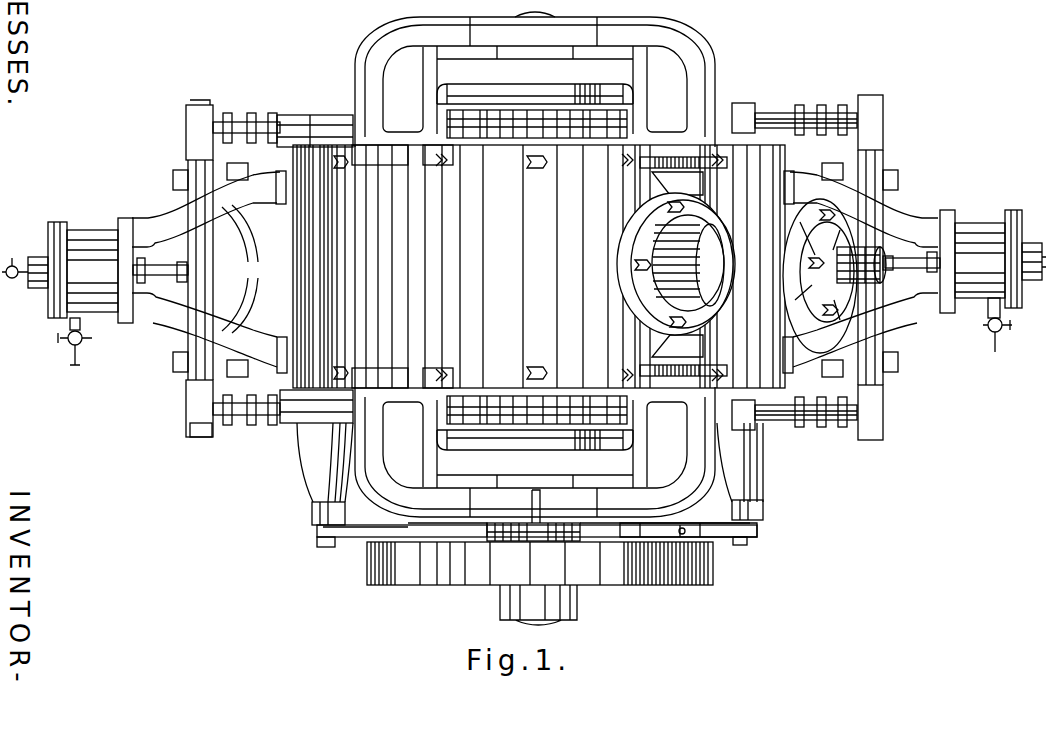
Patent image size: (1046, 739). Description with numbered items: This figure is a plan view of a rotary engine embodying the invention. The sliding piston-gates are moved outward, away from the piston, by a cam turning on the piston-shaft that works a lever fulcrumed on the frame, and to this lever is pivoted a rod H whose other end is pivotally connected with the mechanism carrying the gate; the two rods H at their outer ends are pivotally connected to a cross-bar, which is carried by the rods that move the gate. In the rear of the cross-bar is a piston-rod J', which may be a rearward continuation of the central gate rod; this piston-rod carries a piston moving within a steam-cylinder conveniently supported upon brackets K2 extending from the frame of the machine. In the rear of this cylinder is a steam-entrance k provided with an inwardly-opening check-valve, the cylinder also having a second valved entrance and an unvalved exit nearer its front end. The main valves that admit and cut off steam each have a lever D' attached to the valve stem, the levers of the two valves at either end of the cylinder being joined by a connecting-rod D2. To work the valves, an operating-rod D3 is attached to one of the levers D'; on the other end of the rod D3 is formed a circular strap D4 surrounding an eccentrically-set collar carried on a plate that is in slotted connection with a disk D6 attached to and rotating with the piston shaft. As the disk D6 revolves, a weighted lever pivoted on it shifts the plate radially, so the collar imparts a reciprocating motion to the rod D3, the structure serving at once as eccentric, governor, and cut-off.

The steam-entrance k is at (14, 268).
The piston-rod J' is at (537, 264).
The brackets K2 is at (148, 219).
The rod H is at (855, 108).
The lever D' is at (540, 476).
The connecting-rod D2 is at (355, 543).
The operating-rod D3 is at (658, 535).
The circular strap D4 is at (488, 530).
The disk D6 is at (475, 607).